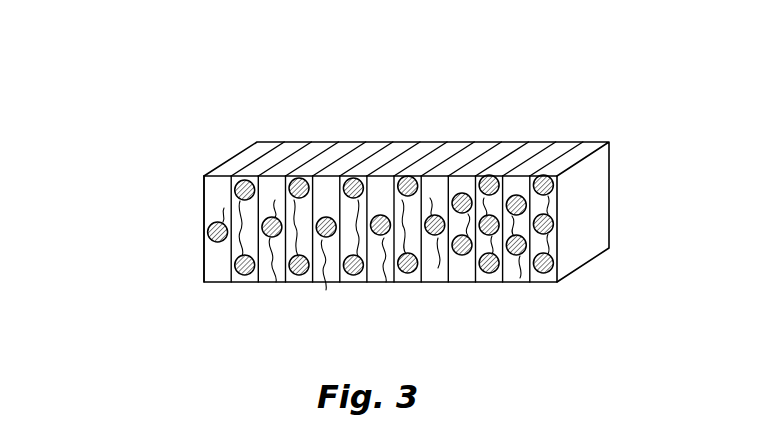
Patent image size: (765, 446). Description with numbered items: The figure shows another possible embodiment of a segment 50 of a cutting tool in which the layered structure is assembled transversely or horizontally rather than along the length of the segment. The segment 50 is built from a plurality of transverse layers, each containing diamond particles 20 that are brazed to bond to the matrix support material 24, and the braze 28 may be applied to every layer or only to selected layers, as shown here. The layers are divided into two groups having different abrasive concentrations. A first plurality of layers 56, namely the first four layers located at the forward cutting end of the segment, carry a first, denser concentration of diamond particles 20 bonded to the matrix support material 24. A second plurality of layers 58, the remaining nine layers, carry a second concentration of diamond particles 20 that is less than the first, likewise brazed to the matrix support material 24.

The segment 50 is at (124, 100).
The diamond particles 20 is at (297, 179).
The matrix support material 24 is at (216, 196).
The braze 28 is at (259, 283).
The first plurality of layers 56 is at (610, 132).
The second plurality of layers 58 is at (505, 132).